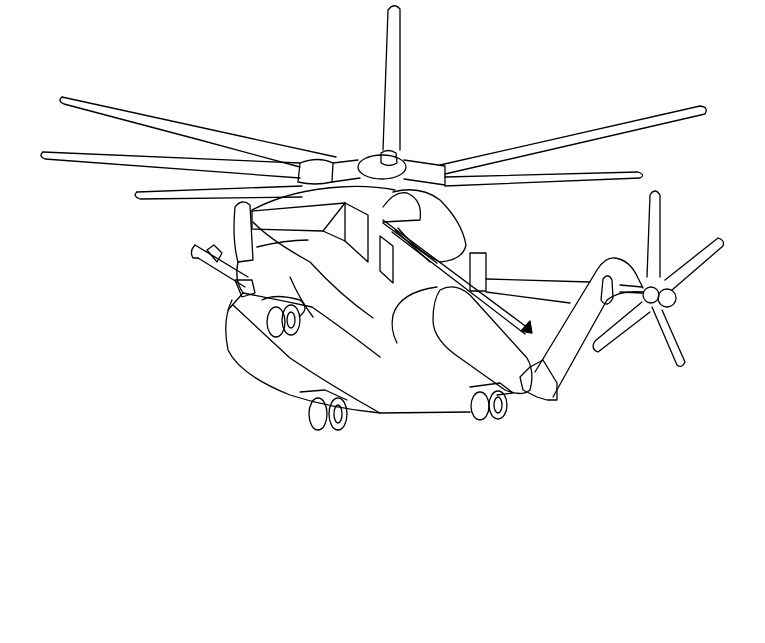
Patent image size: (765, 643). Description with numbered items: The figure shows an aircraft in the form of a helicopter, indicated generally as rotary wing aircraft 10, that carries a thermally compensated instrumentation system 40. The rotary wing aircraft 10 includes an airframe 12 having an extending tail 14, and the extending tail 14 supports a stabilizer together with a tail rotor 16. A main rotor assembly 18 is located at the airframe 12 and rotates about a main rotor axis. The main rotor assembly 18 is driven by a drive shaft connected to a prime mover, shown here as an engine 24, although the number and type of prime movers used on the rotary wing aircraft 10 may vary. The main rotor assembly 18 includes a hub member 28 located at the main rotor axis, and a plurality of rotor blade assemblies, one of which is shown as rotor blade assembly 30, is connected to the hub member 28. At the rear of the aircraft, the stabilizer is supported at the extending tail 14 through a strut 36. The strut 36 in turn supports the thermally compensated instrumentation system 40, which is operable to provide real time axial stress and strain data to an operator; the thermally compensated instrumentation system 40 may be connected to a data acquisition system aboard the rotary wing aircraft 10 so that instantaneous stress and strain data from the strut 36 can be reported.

The rotary wing aircraft 10 is at (158, 306).
The airframe 12 is at (286, 356).
The extending tail 14 is at (567, 337).
The tail rotor 16 is at (665, 312).
The main rotor assembly 18 is at (237, 168).
The engine 24 is at (451, 242).
The hub member 28 is at (365, 160).
The rotor blade assembly 30 is at (185, 125).
The strut 36 is at (553, 397).
The thermally compensated instrumentation system 40 is at (546, 401).